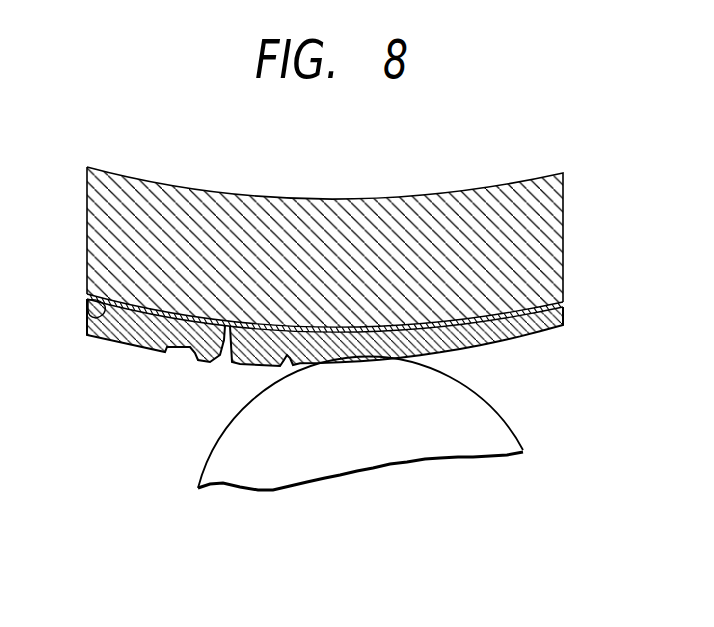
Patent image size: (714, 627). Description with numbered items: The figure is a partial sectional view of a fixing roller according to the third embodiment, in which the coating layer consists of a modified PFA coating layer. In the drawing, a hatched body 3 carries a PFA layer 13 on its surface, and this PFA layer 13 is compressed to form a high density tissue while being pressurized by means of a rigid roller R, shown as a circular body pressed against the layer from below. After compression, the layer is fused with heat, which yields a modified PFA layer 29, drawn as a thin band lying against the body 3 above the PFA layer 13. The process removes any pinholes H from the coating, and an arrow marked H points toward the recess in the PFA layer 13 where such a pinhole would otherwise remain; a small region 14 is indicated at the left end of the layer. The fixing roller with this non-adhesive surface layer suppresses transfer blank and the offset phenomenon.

The base body 3 is at (447, 206).
The modified PFA layer 29 is at (552, 329).
The PFA layer 13 is at (121, 340).
The edge region 14 is at (90, 334).
The pinholes H is at (213, 368).
The rigid roller R is at (527, 455).